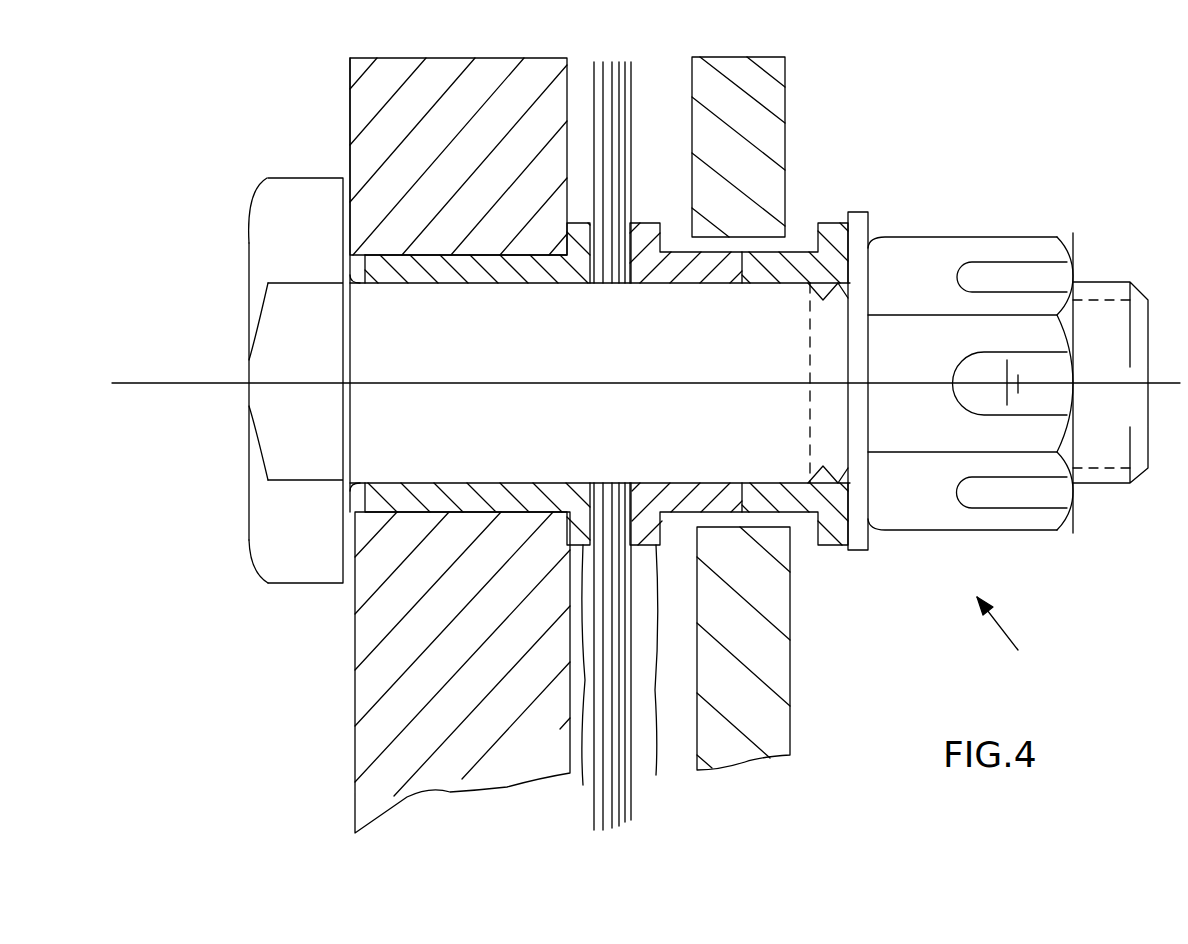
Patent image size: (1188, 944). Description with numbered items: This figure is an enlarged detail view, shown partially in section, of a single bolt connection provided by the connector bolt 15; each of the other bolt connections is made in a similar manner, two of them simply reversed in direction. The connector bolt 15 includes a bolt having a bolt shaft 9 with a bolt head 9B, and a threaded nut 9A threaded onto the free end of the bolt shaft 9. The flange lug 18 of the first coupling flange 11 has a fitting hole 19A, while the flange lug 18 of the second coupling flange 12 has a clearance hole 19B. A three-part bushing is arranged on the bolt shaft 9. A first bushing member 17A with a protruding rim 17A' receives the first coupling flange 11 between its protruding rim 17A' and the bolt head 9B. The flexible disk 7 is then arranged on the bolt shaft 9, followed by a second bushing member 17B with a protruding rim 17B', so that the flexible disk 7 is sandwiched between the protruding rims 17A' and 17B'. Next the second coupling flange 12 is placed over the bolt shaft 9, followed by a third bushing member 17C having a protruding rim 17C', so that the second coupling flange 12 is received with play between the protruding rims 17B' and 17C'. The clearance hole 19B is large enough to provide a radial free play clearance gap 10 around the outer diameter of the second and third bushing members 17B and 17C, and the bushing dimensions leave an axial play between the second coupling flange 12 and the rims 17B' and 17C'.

The flexible disk 7 is at (622, 820).
The bolt shaft 9 is at (400, 427).
The threaded nut 9A is at (942, 253).
The bolt head 9B is at (248, 217).
The radial free play clearance gap 10 is at (782, 243).
The first coupling flange 11 is at (410, 783).
The second coupling flange 12 is at (776, 715).
The connector bolt 15 is at (1016, 643).
The first bushing member 17A is at (477, 353).
The protruding rim of first bushing member 17A' is at (476, 660).
The second bushing member 17B is at (686, 353).
The protruding rim of second bushing member 17B' is at (686, 655).
The third bushing member 17C is at (800, 416).
The protruding rim of third bushing member 17C' is at (841, 539).
The flange lug 18 is at (476, 57).
The fitting hole 19A is at (383, 253).
The clearance hole 19B is at (757, 233).